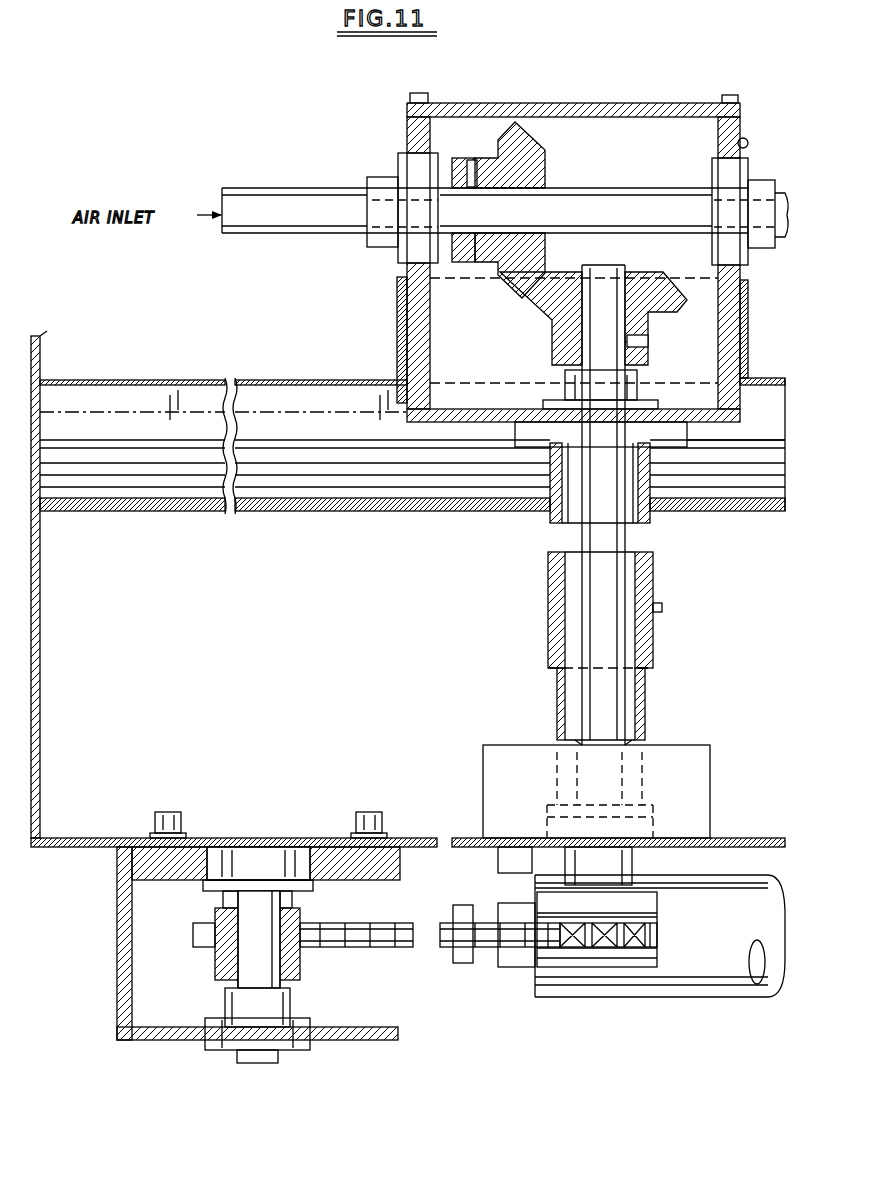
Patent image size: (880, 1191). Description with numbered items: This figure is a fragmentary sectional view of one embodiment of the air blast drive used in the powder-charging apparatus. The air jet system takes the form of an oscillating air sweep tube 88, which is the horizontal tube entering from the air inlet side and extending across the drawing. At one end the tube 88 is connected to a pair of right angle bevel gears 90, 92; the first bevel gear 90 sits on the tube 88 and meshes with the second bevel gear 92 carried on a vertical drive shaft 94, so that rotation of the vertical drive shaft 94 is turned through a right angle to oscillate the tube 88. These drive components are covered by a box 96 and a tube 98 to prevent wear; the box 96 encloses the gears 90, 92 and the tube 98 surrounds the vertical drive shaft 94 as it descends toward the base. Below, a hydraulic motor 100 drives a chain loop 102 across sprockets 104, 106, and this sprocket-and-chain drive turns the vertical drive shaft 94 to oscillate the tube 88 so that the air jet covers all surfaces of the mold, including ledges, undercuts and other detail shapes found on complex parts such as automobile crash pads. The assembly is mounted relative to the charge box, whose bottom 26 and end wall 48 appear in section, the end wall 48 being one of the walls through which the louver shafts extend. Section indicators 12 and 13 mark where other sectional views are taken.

The section line 12- 12 is at (407, 57).
The section line 13- 13 is at (785, 1006).
The bottom 26 is at (294, 838).
The end wall 48 is at (43, 722).
The air sweep tube 88 is at (632, 198).
The bevel gear 90 is at (547, 178).
The bevel gear 92 is at (650, 332).
The vertical drive shaft 94 is at (605, 642).
The box 96 is at (616, 103).
The tube 98 is at (553, 619).
The hydraulic motor 100 is at (628, 998).
The chain loop 102 is at (382, 923).
The sprocket 104 is at (218, 958).
The sprocket 106 is at (637, 910).